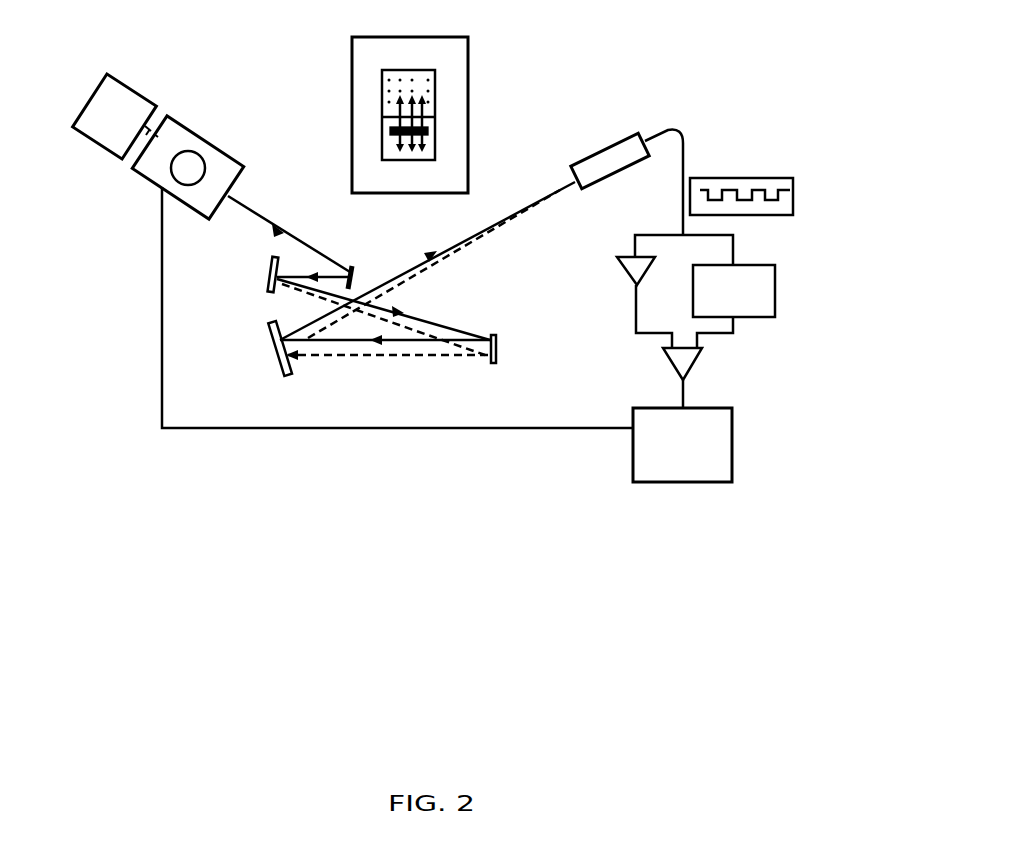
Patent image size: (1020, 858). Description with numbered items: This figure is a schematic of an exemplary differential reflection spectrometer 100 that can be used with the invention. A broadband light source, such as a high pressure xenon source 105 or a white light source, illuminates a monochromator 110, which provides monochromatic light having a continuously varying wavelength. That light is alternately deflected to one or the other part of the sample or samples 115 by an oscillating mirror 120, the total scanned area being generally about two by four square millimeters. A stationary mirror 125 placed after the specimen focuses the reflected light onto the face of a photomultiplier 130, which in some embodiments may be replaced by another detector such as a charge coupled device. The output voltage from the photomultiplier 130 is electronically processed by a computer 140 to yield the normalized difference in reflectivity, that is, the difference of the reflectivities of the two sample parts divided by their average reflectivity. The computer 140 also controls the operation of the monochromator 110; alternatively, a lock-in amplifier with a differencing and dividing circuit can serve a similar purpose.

The differential reflection spectrometer 100 is at (478, 320).
The high pressure xenon source 105 is at (98, 152).
The monochromator 110 is at (163, 192).
The samples 115 is at (497, 365).
The oscillating mirror 120 is at (266, 283).
The stationary mirror 125 is at (278, 366).
The photomultiplier 130 is at (636, 133).
The computer 140 is at (733, 453).